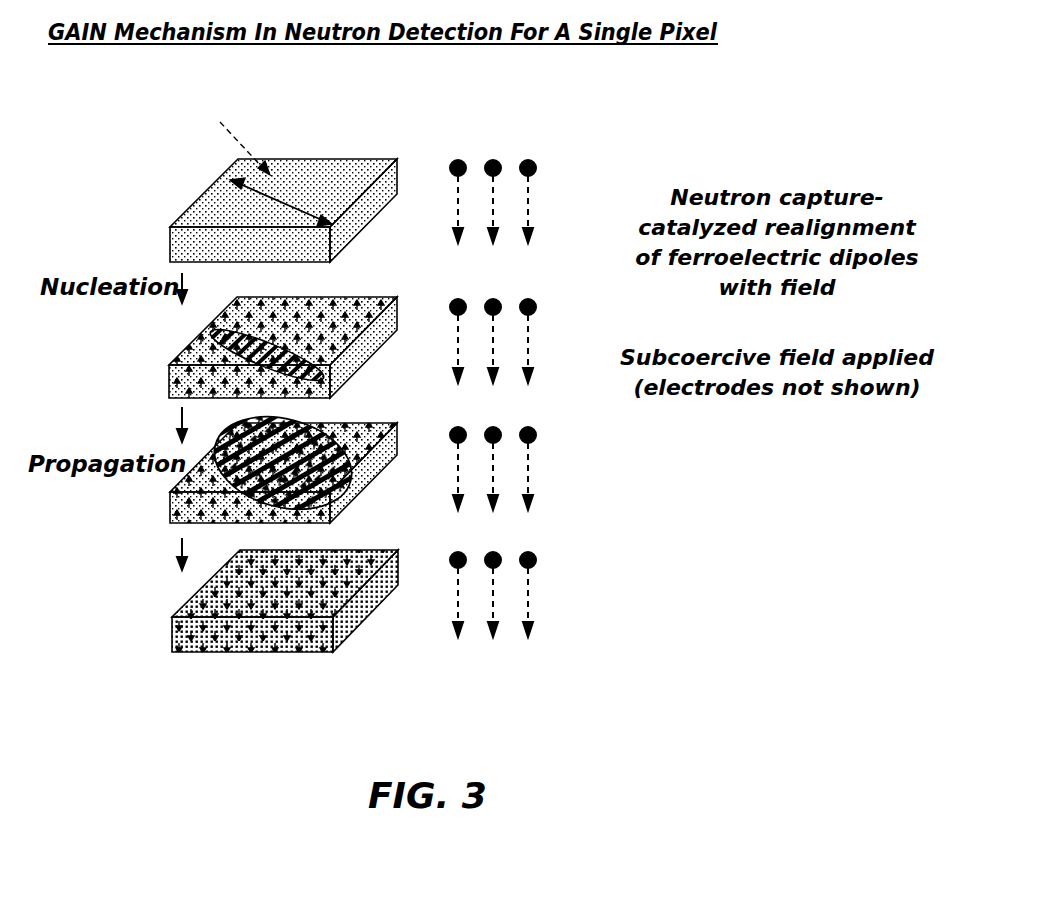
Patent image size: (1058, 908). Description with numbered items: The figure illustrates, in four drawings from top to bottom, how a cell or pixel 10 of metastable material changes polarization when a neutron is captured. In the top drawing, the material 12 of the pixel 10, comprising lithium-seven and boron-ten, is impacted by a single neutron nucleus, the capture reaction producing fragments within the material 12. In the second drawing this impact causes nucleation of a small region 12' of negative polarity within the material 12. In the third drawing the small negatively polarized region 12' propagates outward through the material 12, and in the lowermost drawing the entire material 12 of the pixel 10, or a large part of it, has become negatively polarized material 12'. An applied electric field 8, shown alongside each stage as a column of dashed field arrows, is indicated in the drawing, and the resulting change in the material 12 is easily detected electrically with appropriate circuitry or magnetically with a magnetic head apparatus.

The electric field 8 is at (550, 160).
The pixel 10 is at (300, 138).
The material 12 is at (308, 310).
The region of negative polarity 12' is at (322, 498).